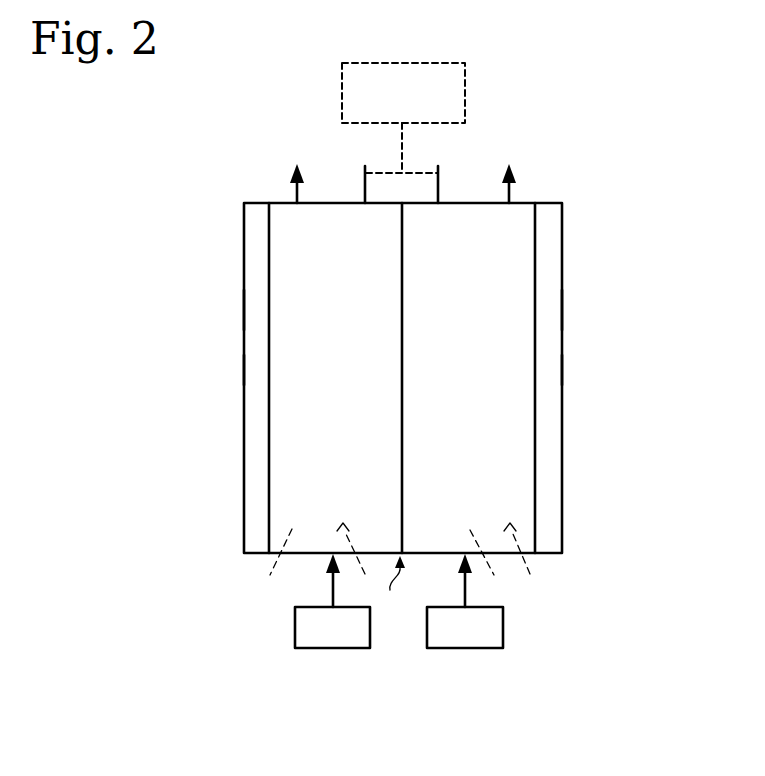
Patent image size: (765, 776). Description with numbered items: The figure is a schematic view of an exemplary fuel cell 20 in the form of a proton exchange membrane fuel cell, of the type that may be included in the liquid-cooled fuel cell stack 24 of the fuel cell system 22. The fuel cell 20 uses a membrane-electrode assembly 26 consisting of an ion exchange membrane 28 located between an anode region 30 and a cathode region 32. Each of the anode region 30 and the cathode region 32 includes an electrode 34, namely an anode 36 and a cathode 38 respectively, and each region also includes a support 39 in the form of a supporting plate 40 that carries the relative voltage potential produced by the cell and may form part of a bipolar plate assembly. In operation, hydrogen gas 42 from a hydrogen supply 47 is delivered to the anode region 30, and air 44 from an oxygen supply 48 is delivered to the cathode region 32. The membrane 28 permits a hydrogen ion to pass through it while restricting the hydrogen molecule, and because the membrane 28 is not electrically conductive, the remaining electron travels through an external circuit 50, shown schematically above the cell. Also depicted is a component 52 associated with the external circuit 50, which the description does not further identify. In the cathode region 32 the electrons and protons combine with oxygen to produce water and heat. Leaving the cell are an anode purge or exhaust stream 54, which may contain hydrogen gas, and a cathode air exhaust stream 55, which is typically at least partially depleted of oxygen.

The fuel cell 20 is at (188, 292).
The fuel cell system 22 is at (169, 115).
The fuel cell stack 24 is at (168, 255).
The membrane-electrode assembly 26 is at (388, 591).
The ion exchange membrane 28 is at (402, 337).
The anode region 30 is at (260, 438).
The cathode region 32 is at (546, 463).
The electrode 34 is at (443, 562).
The anode 36 is at (273, 566).
The cathode 38 is at (490, 565).
The support 39 is at (236, 306).
The supporting plate 40 is at (244, 367).
The hydrogen gas 42 is at (333, 596).
The air 44 is at (465, 596).
The hydrogen supply 47 is at (335, 648).
The oxygen supply 48 is at (467, 648).
The external circuit 50 is at (388, 170).
The power supply / controller 52 is at (472, 93).
The anode purge stream 54 is at (295, 192).
The cathode air exhaust stream 55 is at (511, 192).